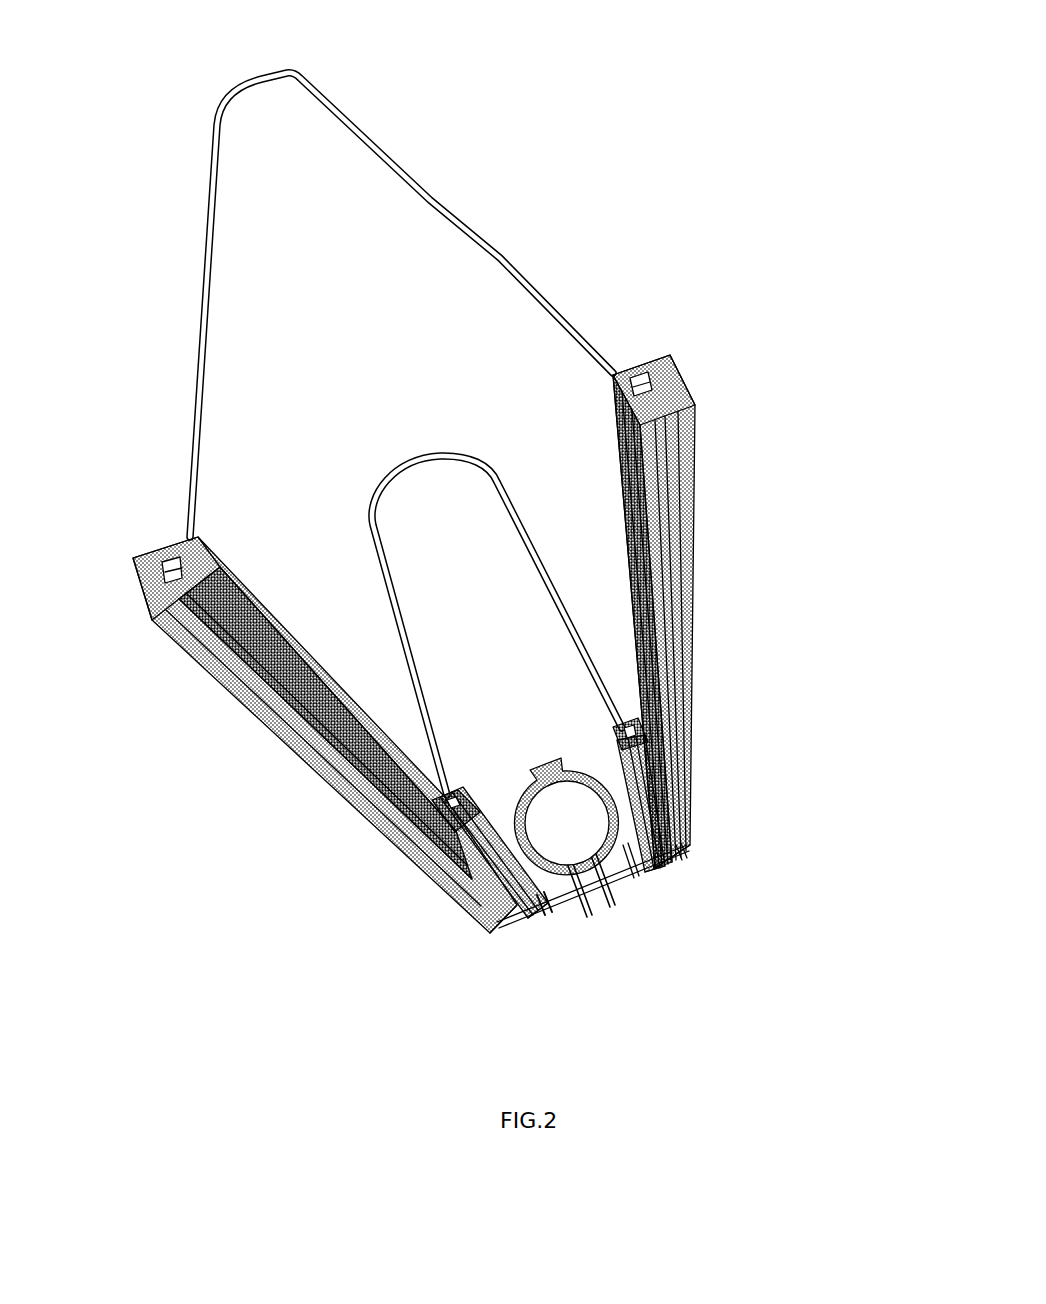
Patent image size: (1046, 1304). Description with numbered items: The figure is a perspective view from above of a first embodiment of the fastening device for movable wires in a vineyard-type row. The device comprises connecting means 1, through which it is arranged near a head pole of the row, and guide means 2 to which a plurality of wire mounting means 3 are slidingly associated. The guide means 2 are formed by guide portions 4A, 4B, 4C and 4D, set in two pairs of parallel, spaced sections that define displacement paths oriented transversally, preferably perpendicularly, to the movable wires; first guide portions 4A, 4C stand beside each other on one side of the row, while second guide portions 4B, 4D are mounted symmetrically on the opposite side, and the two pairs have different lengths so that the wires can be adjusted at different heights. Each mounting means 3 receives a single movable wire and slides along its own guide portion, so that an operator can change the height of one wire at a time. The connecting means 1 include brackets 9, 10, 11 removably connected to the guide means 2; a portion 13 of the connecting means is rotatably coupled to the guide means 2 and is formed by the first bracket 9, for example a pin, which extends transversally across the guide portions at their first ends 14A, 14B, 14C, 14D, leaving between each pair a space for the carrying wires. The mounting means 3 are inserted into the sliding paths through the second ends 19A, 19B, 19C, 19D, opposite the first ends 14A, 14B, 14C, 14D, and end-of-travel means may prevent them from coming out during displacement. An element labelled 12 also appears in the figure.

The connecting means 1 is at (533, 235).
The guide means 2 is at (712, 343).
The wire mounting means 3 is at (165, 666).
The first guide portion 4A is at (240, 708).
The second guide portion 4B is at (697, 427).
The first guide portion of second pair 4C is at (484, 829).
The second guide portion of second pair 4D is at (620, 773).
The first bracket 9 is at (630, 877).
The bracket 10 is at (440, 453).
The bracket 11 is at (341, 113).
The clamp ring 12 is at (530, 818).
The portion of connecting means 13 is at (580, 940).
The first end of guide portion 4A 14A is at (490, 933).
The first end of guide portion 4B 14B is at (693, 863).
The first end of guide portion 4C 14C is at (541, 923).
The first end of guide portion 4D 14D is at (650, 870).
The second end of guide portion 4A 19A is at (134, 557).
The second end of guide portion 4B 19B is at (655, 357).
The second end of guide portion 4C 19C is at (468, 795).
The second end of guide portion 4D 19D is at (618, 730).